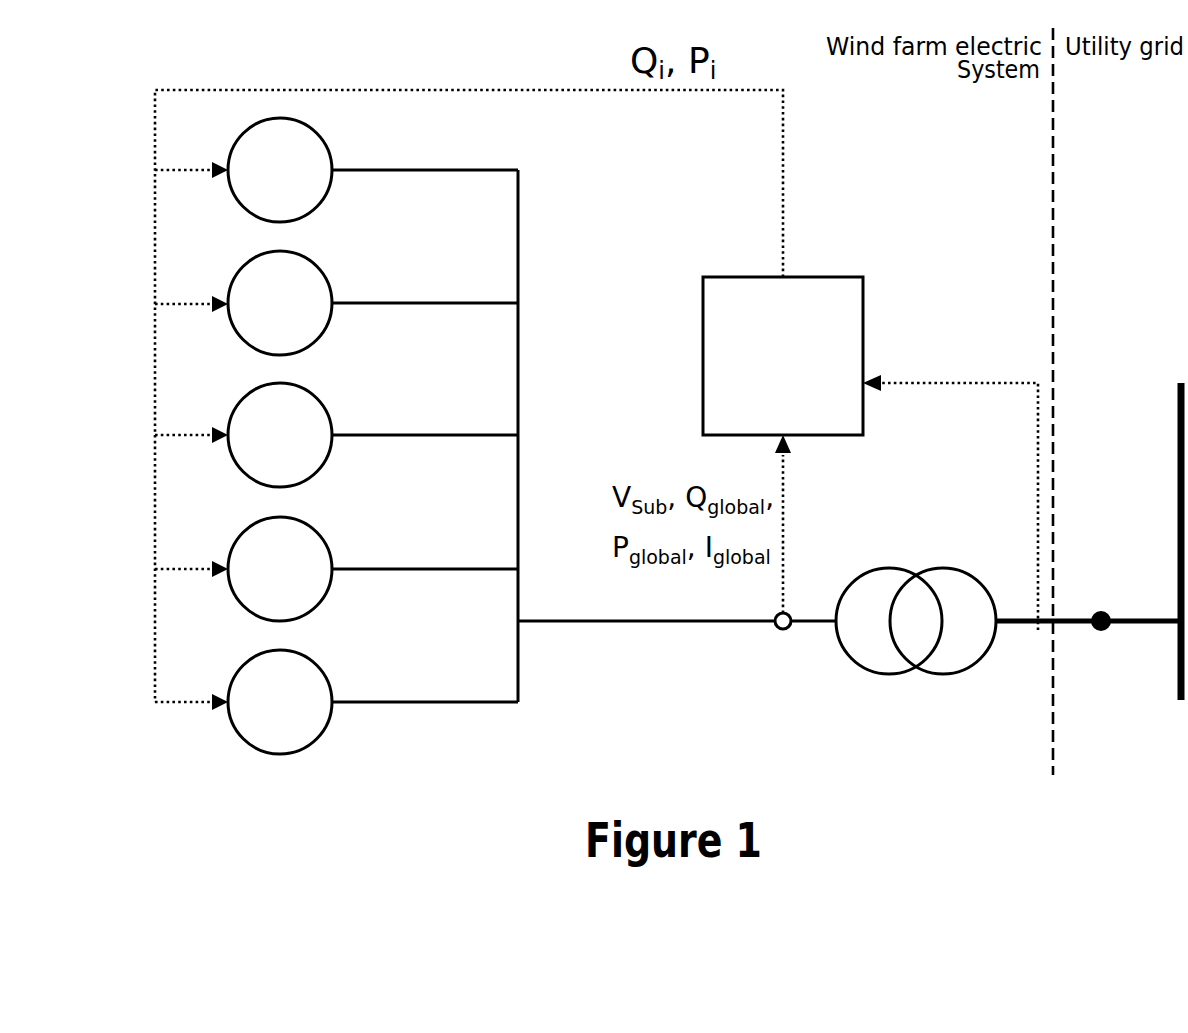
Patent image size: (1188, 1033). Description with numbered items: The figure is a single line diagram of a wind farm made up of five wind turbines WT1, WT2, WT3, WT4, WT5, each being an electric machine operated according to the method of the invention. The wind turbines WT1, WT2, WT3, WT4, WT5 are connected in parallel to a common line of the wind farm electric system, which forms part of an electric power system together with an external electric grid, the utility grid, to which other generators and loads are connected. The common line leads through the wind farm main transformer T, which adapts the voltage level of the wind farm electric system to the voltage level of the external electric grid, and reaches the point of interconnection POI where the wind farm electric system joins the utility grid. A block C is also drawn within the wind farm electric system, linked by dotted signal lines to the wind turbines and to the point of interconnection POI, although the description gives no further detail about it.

The wind turbine WT1 is at (373, 170).
The wind turbine WT2 is at (373, 303).
The wind turbine WT3 is at (373, 435).
The wind turbine WT4 is at (373, 569).
The wind turbine WT5 is at (373, 702).
The wind farm main transformer T is at (915, 658).
The wind farm controller C is at (821, 356).
The point of interconnection POI is at (1088, 545).